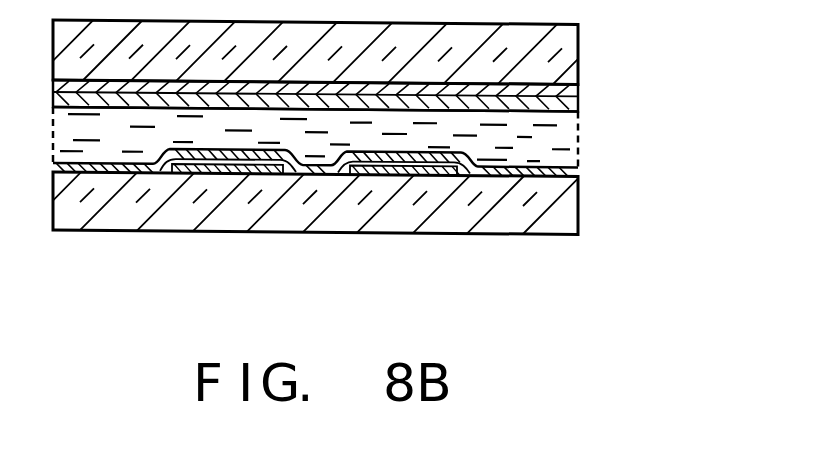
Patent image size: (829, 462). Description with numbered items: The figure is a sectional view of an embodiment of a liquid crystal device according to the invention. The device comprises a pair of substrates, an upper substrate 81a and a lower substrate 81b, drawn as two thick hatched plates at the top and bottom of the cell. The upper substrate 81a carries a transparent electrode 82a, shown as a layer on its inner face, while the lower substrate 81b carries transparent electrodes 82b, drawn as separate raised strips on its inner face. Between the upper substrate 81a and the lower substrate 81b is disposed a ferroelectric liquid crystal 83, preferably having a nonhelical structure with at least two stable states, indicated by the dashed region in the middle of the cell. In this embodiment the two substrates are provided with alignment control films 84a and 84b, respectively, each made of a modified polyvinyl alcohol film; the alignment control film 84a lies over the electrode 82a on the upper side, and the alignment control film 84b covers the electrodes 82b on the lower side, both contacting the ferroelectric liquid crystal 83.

The upper substrate 81a is at (580, 64).
The transparent electrode 82a is at (580, 95).
The alignment control film 84a is at (579, 110).
The ferroelectric liquid crystal 83 is at (565, 140).
The alignment control film 84b is at (580, 175).
The transparent electrode 82b is at (222, 170).
The lower substrate 81b is at (580, 216).